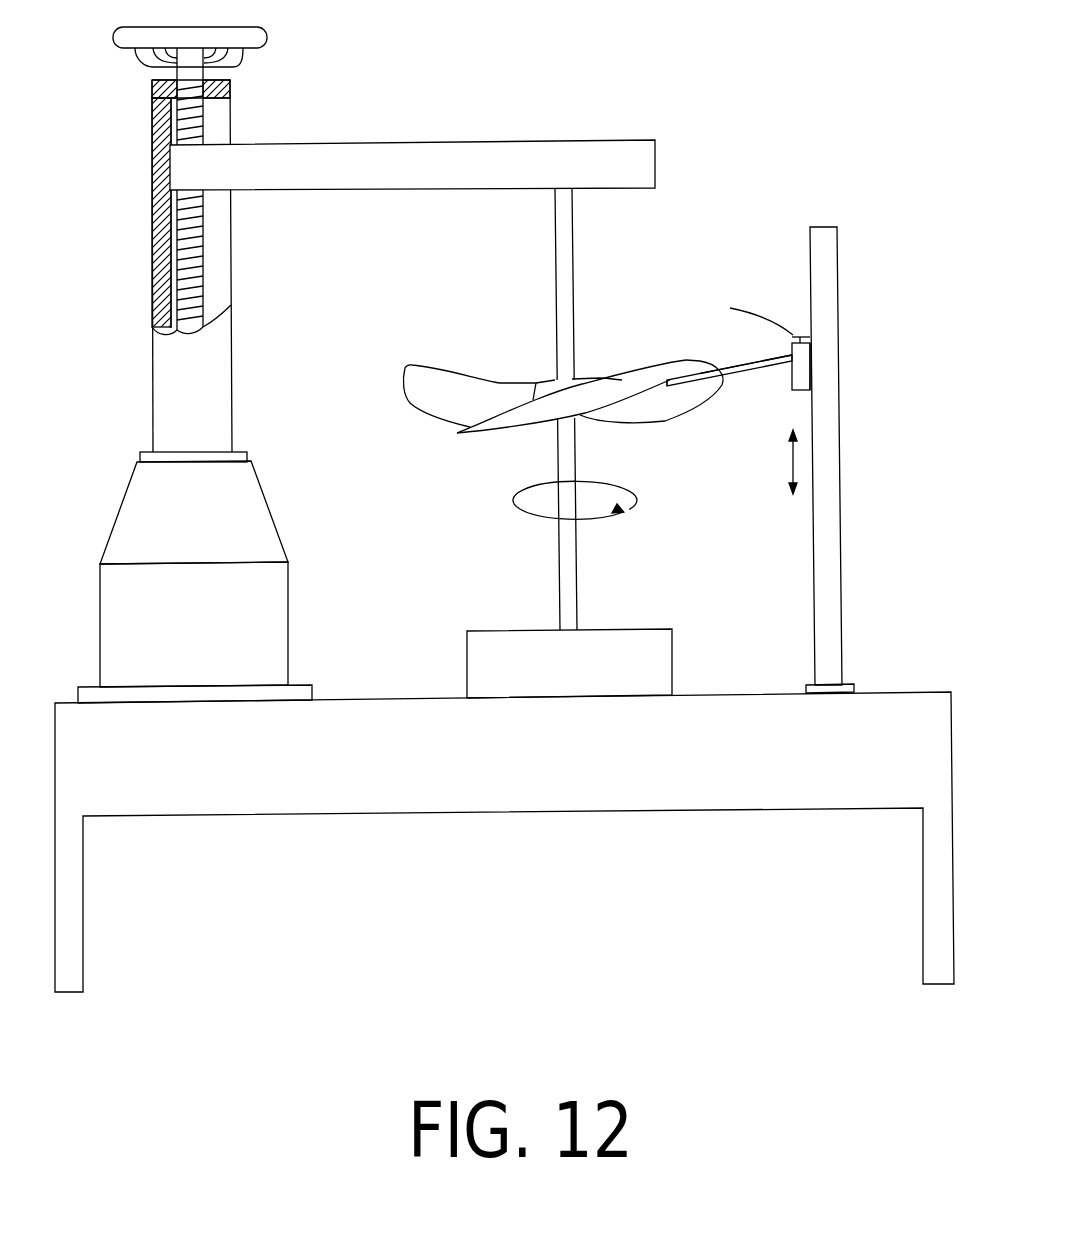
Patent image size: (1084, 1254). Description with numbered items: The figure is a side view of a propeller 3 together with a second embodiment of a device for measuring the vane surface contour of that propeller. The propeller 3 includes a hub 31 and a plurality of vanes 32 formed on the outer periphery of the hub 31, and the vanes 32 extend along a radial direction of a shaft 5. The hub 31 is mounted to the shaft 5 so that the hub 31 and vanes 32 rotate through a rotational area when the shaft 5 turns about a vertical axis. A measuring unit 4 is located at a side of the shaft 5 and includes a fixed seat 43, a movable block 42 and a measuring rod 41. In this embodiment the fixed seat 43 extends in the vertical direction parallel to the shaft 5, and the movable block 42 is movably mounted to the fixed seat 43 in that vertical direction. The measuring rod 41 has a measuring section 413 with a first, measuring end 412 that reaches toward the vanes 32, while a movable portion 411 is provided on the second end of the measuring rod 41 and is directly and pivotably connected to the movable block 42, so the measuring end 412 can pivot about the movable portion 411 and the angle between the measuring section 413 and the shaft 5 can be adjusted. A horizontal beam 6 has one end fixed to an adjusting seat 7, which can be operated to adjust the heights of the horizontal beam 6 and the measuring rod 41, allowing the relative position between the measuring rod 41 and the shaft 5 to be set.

The propeller 3 is at (562, 392).
The hub 31 is at (547, 383).
The vanes 32 is at (665, 415).
The measuring unit 4 is at (771, 425).
The measuring rod 41 is at (727, 350).
The movable portion 411 is at (810, 363).
The measuring end 412 is at (673, 390).
The measuring section 413 is at (750, 357).
The movable block 42 is at (797, 335).
The fixed seat 43 is at (825, 357).
The shaft 5 is at (560, 248).
The horizontal beam 6 is at (513, 153).
The adjusting seat 7 is at (165, 382).